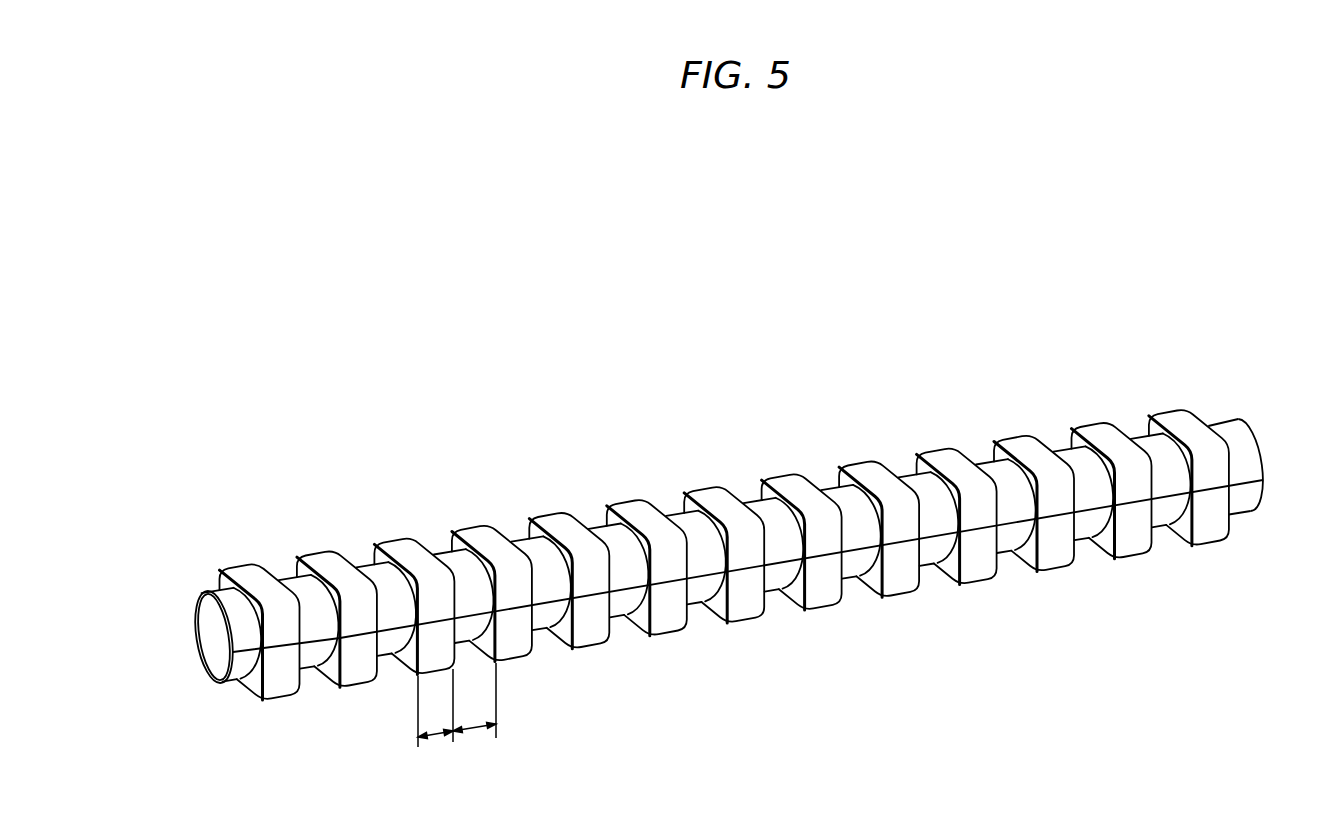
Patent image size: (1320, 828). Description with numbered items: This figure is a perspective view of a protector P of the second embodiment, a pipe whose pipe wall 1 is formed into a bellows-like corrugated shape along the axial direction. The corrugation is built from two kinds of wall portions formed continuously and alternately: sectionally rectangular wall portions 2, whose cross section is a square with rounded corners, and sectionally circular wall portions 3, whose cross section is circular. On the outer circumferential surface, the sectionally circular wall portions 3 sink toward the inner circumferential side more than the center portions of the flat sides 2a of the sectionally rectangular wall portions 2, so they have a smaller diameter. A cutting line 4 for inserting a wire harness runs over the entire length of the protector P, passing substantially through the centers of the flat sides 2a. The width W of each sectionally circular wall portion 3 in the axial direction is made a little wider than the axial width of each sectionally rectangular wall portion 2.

The pipe wall 1 is at (726, 486).
The sectionally rectangular wall portion 2 is at (873, 468).
The flat side 2a is at (1133, 532).
The sectionally circular wall portion 3 is at (998, 482).
The cutting line 4 is at (933, 540).
The protector P is at (450, 497).
The width of sectionally circular wall portion W is at (487, 772).